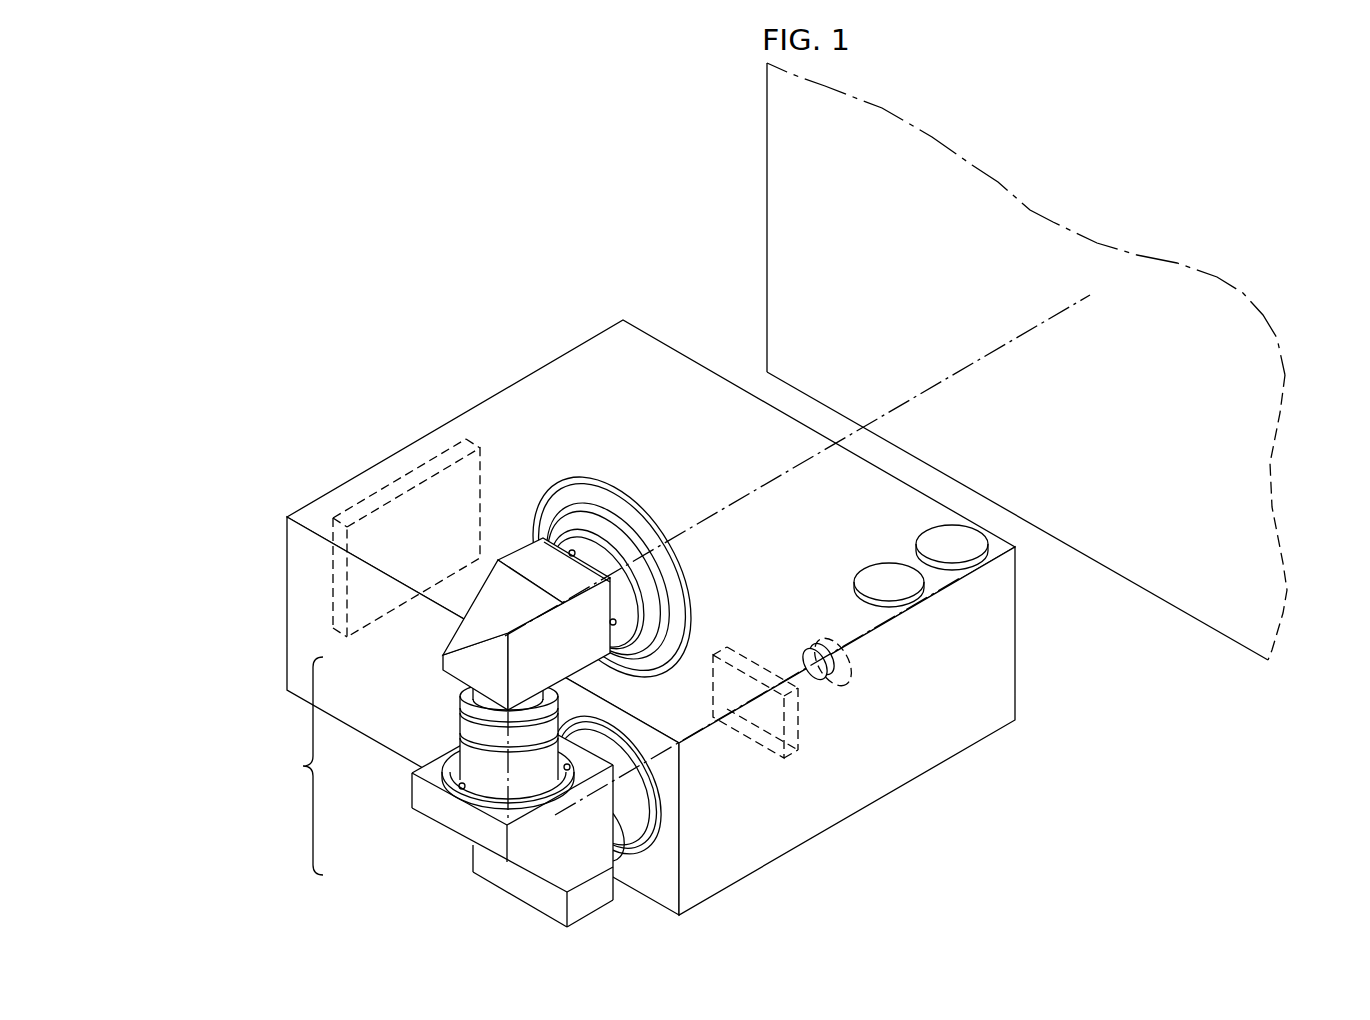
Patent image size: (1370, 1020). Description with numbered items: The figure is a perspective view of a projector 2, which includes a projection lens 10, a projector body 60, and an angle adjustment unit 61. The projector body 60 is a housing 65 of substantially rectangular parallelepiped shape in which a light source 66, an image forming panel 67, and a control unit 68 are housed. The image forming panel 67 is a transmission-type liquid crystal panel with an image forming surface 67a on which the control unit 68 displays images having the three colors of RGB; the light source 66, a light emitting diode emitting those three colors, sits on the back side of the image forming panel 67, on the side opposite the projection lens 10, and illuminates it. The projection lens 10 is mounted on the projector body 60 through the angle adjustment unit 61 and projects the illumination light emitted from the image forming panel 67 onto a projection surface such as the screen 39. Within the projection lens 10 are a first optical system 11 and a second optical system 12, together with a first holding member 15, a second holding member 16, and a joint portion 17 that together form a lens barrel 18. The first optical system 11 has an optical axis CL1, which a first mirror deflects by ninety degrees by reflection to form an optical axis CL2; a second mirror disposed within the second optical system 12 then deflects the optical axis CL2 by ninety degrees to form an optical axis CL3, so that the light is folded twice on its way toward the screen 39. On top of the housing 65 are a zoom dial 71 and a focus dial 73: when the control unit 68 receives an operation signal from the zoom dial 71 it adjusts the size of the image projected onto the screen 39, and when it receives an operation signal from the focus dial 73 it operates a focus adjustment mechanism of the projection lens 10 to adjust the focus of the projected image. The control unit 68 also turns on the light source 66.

The projector 2 is at (614, 613).
The projection lens 10 is at (645, 485).
The first optical system 11 is at (553, 842).
The second optical system 12 is at (494, 618).
The first holding member 15 is at (427, 800).
The second holding member 16 is at (463, 634).
The joint portion 17 is at (443, 770).
The lens barrel 18 is at (444, 719).
The screen 39 is at (767, 189).
The projector body 60 is at (651, 617).
The angle adjustment unit 61 is at (656, 852).
The housing 65 is at (885, 494).
The light source 66 is at (820, 648).
The image forming panel 67 is at (733, 640).
The image forming surface 67a is at (773, 752).
The control unit 68 is at (333, 572).
The zoom dial 71 is at (883, 573).
The focus dial 73 is at (963, 537).
The optical axis CL1 is at (665, 757).
The optical axis CL2 is at (470, 736).
The optical axis CL3 is at (565, 590).